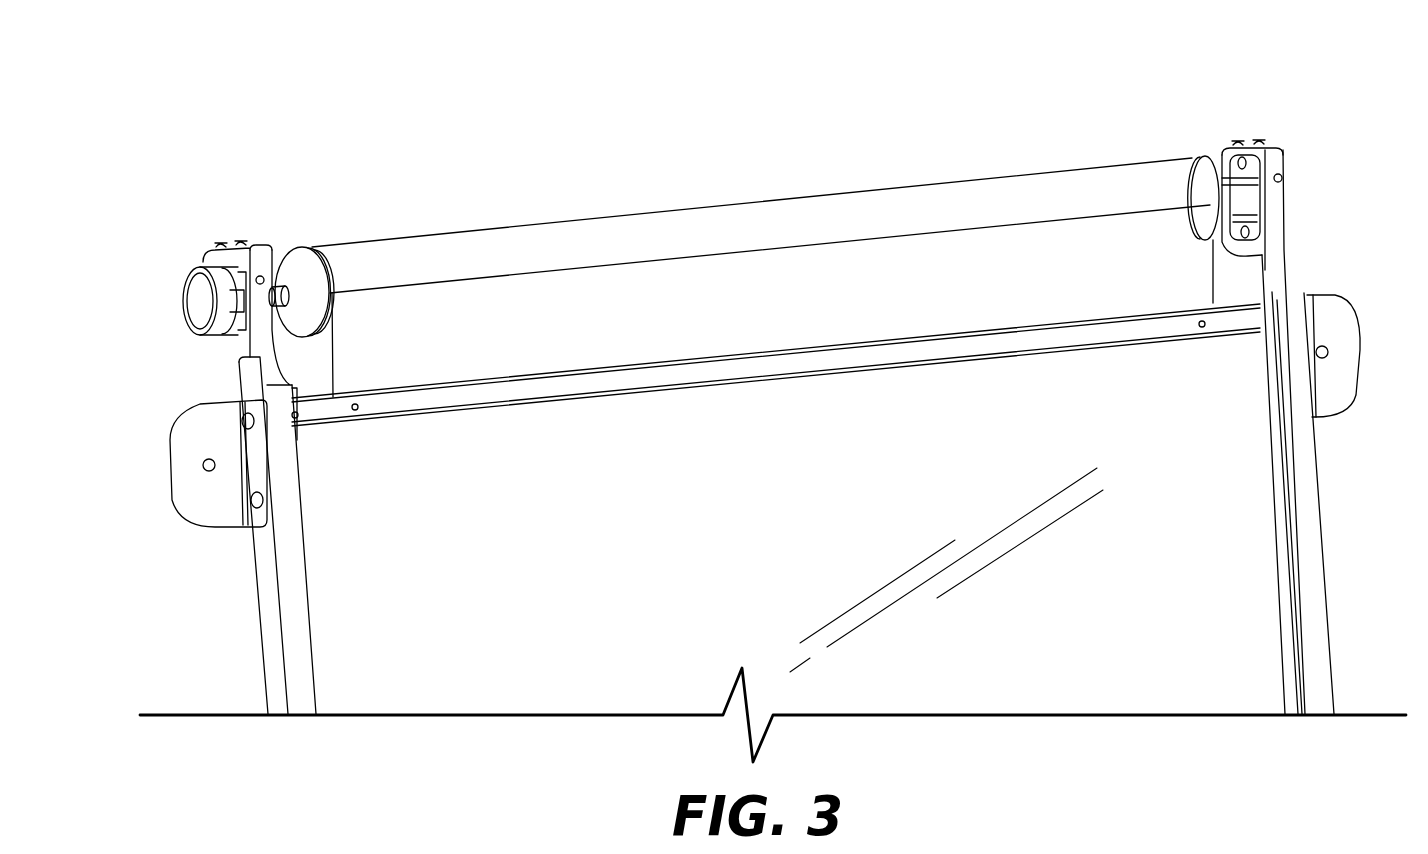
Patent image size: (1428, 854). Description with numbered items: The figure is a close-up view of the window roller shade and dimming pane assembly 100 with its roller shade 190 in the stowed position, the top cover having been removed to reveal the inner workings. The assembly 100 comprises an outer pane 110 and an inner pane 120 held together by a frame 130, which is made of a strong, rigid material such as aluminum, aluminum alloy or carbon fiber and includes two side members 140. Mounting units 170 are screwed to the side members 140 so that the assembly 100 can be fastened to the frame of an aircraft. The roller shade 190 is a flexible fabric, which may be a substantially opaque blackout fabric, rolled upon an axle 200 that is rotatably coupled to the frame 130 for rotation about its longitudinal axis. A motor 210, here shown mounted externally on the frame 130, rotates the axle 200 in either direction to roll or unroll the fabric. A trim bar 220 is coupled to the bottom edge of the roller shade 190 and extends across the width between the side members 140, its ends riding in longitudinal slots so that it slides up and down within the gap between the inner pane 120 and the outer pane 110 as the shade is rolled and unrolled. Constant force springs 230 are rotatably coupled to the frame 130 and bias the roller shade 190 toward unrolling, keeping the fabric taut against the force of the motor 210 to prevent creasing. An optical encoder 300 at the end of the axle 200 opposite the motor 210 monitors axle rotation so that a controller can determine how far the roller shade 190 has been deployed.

The window roller shade and dimming pane assembly 100 is at (218, 143).
The outer pane 110 is at (1308, 541).
The inner pane 120 is at (1275, 595).
The frame 130 is at (272, 630).
The side members 140 is at (273, 690).
The mounting units 170 is at (208, 440).
The roller shade 190 is at (473, 250).
The axle 200 is at (283, 285).
The motor 210 is at (1248, 200).
The trim bar 220 is at (1252, 317).
The constant force springs 230 is at (1280, 487).
The optical encoder 300 is at (195, 302).